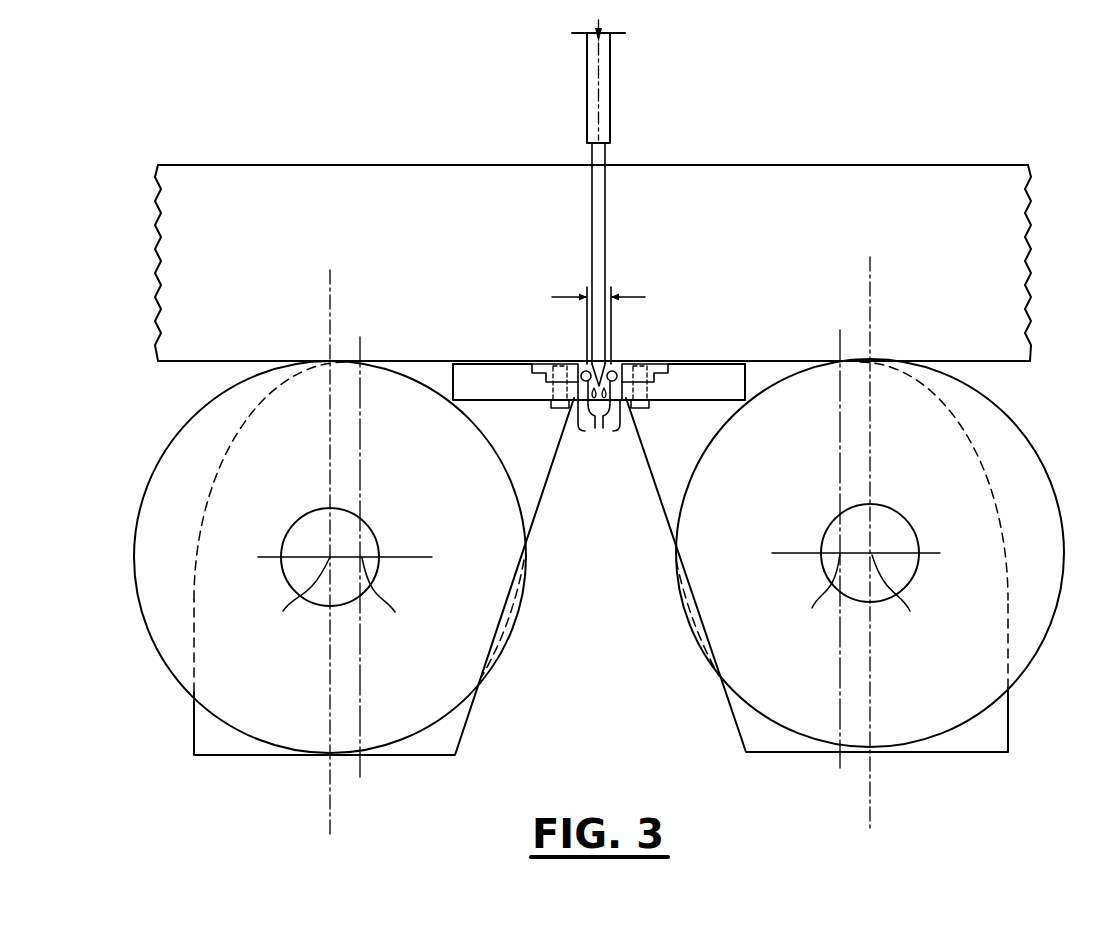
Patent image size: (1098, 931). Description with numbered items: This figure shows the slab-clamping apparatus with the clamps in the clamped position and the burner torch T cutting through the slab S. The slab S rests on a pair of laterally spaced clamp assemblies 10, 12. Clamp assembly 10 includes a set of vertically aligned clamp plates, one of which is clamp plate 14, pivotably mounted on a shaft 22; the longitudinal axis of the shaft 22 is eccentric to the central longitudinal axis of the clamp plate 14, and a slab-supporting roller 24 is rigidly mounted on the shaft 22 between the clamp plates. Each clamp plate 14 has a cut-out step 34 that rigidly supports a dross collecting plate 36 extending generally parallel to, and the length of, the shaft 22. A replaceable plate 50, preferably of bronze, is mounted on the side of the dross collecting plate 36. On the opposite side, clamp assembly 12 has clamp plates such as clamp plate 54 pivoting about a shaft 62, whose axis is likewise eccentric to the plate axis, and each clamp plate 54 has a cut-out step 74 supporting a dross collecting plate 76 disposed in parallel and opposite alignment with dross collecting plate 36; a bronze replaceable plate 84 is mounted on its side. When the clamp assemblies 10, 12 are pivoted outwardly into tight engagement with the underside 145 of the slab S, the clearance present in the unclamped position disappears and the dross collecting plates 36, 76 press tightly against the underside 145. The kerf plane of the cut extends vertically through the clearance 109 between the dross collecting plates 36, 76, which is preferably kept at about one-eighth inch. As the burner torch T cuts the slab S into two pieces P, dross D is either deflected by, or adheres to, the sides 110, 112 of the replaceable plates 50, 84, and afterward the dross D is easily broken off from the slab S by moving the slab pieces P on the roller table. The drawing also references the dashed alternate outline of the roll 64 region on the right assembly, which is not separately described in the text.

The clamp assembly 10 is at (354, 557).
The clamp assembly 12 is at (845, 549).
The clamp plate 14 is at (470, 715).
The shaft 22 is at (303, 516).
The slab-supporting roller 24 is at (512, 623).
The cut-out step 34 is at (510, 397).
The dross collecting plate 36 is at (472, 368).
The replaceable plate 50 is at (575, 362).
The clamp plate 54 is at (733, 725).
The shaft 62 is at (895, 507).
The second roll (dashed alternate position) 64 is at (692, 638).
The cut-out step 74 is at (678, 397).
The dross collecting plate 76 is at (715, 366).
The replaceable plate 84 is at (623, 362).
The clearance 109 is at (628, 293).
The side 110 is at (583, 420).
The side 112 is at (614, 420).
The underside 145 is at (182, 364).
The slab S is at (282, 164).
The slab piece P is at (415, 163).
The burner torch T is at (611, 82).
The dross D is at (599, 413).